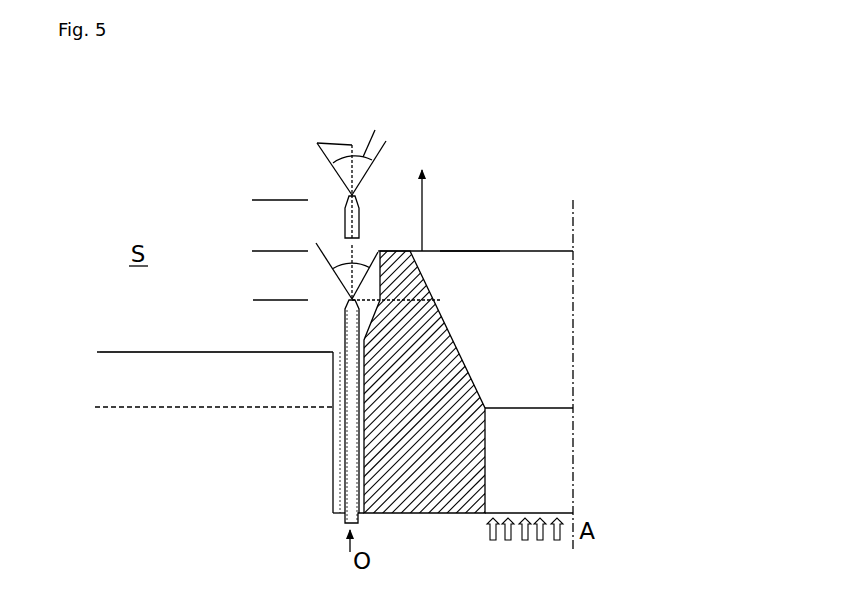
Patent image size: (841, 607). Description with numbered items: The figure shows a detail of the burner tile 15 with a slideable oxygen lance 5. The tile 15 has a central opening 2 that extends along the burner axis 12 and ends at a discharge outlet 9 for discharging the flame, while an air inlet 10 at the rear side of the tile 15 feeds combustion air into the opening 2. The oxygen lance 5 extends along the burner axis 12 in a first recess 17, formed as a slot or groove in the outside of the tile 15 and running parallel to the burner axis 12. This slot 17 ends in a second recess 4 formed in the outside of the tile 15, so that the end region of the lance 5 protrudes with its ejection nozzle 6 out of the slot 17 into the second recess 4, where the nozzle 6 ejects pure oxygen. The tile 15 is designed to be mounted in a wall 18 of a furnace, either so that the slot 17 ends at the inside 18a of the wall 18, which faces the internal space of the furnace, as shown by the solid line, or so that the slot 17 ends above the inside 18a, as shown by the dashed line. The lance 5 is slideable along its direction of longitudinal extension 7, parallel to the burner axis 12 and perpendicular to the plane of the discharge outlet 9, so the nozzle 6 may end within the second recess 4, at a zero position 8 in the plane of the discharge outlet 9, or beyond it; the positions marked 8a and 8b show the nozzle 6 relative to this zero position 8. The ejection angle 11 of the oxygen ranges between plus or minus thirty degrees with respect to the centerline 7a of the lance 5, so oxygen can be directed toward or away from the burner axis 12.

The central opening 2 is at (548, 442).
The second recess 4 is at (322, 312).
The oxygen lance 5 is at (352, 413).
The ejection nozzle 6 is at (433, 293).
The direction of longitudinal extension 7 is at (422, 222).
The centerline of the oxygen lance 7a is at (318, 143).
The zero position 8 is at (267, 252).
The zero position 8a is at (263, 199).
The zero position 8b is at (329, 301).
The discharge outlet 9 is at (468, 251).
The air inlet 10 is at (540, 508).
The ejection angle 11 is at (375, 130).
The burner axis 12 is at (573, 350).
The burner tile 15 is at (333, 112).
The first recess 17 is at (327, 391).
The wall 18 is at (183, 353).
The inside of the wall 18a is at (142, 351).